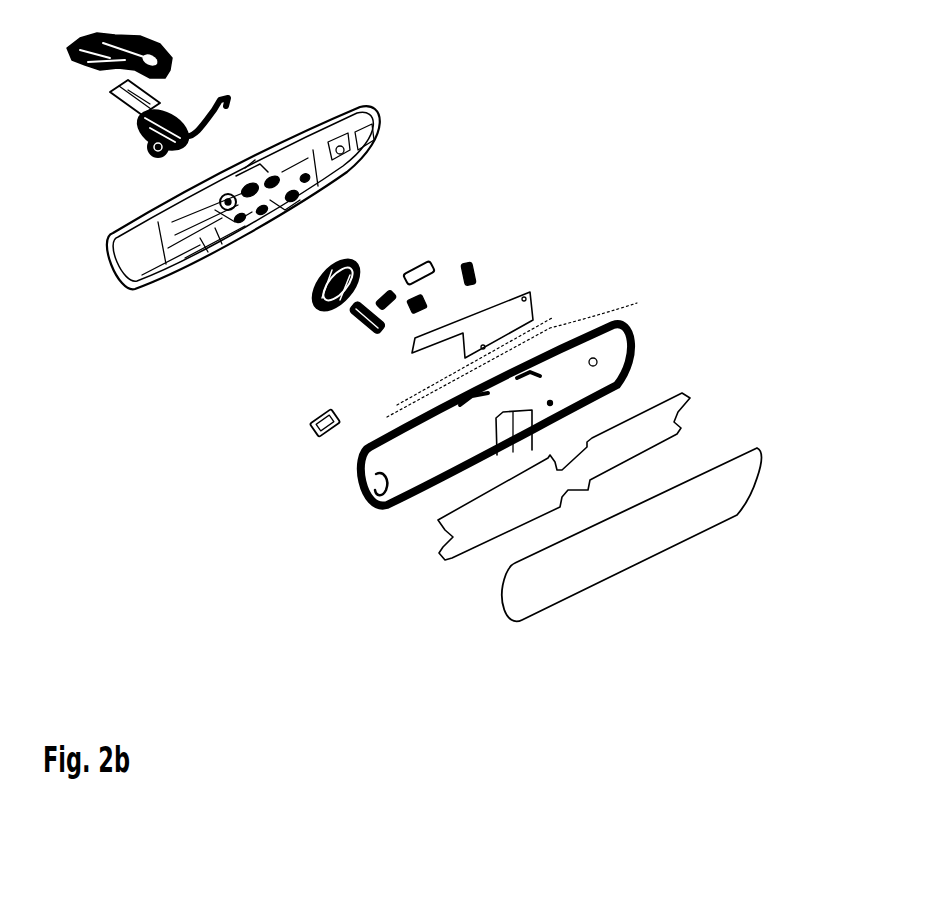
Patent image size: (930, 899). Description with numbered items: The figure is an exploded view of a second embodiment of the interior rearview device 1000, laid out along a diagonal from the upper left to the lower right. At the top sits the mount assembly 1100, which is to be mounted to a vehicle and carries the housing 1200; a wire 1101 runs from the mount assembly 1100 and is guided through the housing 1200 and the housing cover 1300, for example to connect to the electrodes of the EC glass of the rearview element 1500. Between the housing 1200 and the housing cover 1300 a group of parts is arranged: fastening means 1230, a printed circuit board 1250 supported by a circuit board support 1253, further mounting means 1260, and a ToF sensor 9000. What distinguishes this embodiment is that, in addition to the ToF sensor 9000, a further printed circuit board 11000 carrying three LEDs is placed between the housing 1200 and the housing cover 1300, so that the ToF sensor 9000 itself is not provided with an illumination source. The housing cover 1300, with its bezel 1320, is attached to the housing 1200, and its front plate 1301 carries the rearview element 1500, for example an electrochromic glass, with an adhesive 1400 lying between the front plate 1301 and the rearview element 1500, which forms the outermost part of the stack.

The rearview device 1000 is at (733, 102).
The mount assembly 1100 is at (173, 48).
The wire 1101 is at (214, 98).
The housing 1200 is at (396, 129).
The fastening means 1230 is at (358, 330).
The circuit board support 1253 is at (410, 311).
The mounting means 1260 is at (478, 267).
The printed circuit board 1250 is at (534, 294).
The printed circuit board 11000 is at (637, 303).
The housing cover 1300 is at (514, 452).
The front plate 1301 is at (370, 497).
The bezel 1320 is at (407, 503).
The ToF sensor 9000 is at (307, 424).
The adhesive 1400 is at (668, 398).
The rearview element 1500 is at (703, 523).